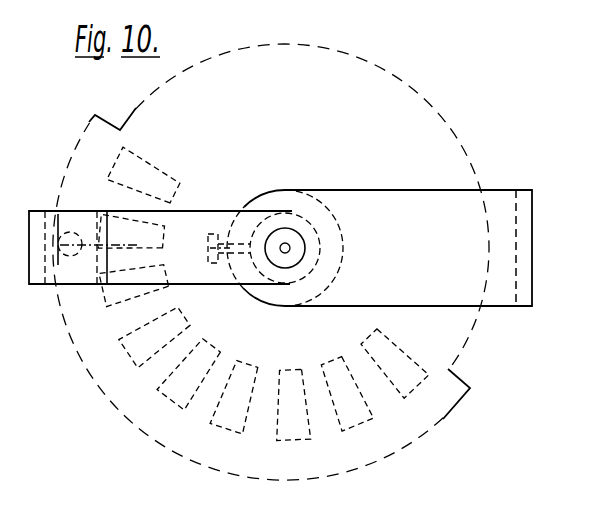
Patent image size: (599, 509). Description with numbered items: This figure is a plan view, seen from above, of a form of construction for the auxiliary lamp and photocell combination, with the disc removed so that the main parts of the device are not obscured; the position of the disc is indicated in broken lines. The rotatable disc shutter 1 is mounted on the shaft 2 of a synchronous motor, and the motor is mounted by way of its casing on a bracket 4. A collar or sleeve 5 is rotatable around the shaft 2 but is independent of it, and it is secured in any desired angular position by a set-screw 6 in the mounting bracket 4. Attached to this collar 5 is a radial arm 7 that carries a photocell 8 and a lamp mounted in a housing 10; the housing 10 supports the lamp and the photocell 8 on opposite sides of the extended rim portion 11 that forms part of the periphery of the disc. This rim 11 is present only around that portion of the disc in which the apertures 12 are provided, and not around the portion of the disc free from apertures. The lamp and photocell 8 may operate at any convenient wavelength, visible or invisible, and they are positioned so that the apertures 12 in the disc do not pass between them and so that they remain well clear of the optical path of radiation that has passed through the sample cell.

The rotatable disc shutter 1 is at (390, 98).
The shaft 2 is at (291, 247).
The bracket 4 is at (506, 306).
The collar or sleeve 5 is at (337, 275).
The set-screw 6 is at (208, 234).
The radial arm 7 is at (188, 272).
The photocell 8 is at (58, 245).
The housing 10 is at (58, 214).
The extended rim portion 11 is at (79, 163).
The apertures 12 is at (240, 373).